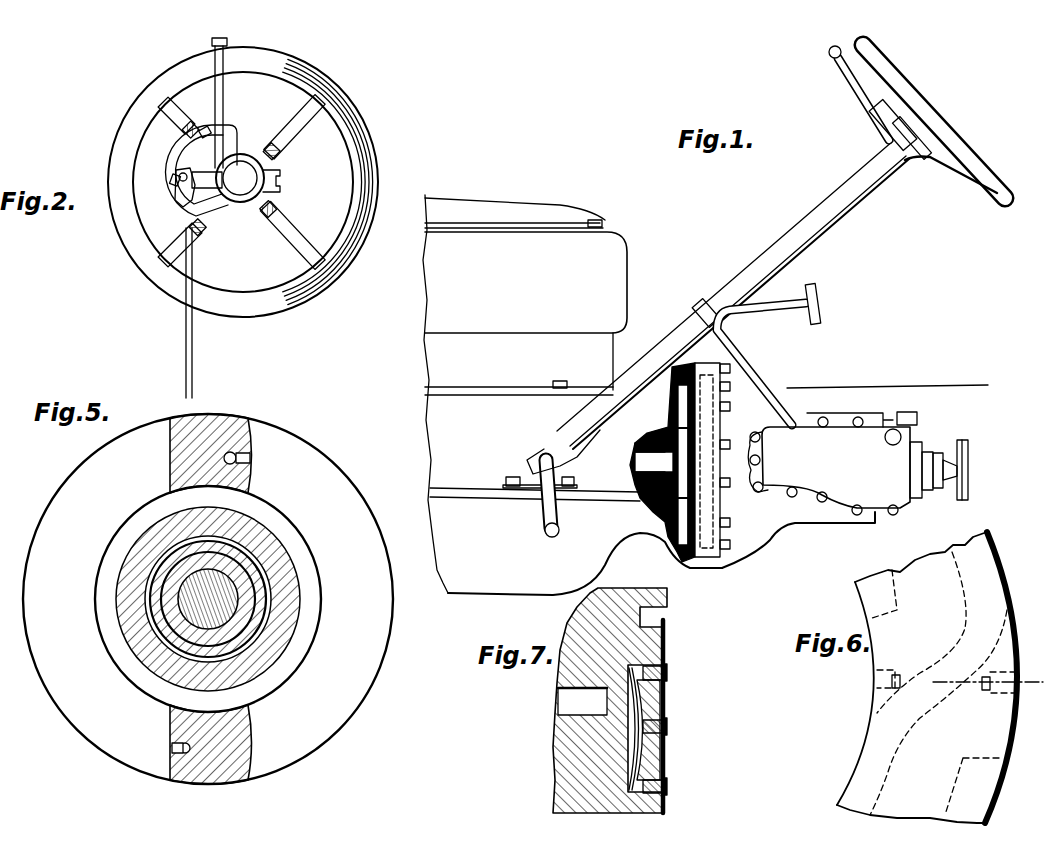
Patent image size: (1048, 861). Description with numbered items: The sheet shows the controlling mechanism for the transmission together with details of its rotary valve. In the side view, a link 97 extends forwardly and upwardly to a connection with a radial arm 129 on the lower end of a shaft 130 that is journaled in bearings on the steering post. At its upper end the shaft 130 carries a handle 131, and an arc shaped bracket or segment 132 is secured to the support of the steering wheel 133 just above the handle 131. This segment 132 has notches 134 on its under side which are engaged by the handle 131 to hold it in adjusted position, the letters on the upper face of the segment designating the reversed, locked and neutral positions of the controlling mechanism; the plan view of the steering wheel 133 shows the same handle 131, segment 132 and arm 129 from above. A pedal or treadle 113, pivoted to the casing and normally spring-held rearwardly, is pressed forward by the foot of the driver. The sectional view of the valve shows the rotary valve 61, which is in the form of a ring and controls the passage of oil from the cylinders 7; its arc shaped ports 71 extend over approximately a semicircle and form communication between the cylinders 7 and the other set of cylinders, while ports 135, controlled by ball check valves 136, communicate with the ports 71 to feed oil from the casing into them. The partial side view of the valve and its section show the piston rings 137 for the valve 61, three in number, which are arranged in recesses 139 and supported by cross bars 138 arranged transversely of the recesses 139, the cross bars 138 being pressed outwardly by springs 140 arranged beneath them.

In FIG. 6, the cylinders 7 is at (983, 683).
In FIG. 5, the rotary valve 61 is at (236, 476).
In FIG. 7, the rotary valve 61 is at (571, 750).
In FIG. 5, the ports 71 is at (208, 599).
In FIG. 1, the link 97 is at (775, 390).
In FIG. 1, the pedal or treadle 113 is at (730, 345).
In FIG. 2, the radial arm 129 is at (200, 175).
In FIG. 1, the radial arm 129 is at (698, 312).
In FIG. 1, the shaft 130 is at (808, 224).
In FIG. 2, the handle 131 is at (226, 38).
In FIG. 1, the handle 131 is at (828, 58).
In FIG. 2, the arc shaped bracket or segment 132 is at (236, 135).
In FIG. 1, the arc shaped bracket or segment 132 is at (890, 100).
In FIG. 2, the steering wheel 133 is at (266, 182).
In FIG. 1, the steering wheel 133 is at (973, 170).
In FIG. 1, the notches 134 is at (915, 120).
In FIG. 5, the ports 135 is at (248, 458).
In FIG. 5, the ball check valves 136 is at (234, 455).
In FIG. 7, the piston rings 137 is at (665, 670).
In FIG. 7, the cross bars 138 is at (662, 708).
In FIG. 7, the recesses 139 is at (632, 790).
In FIG. 7, the springs 140 is at (662, 652).